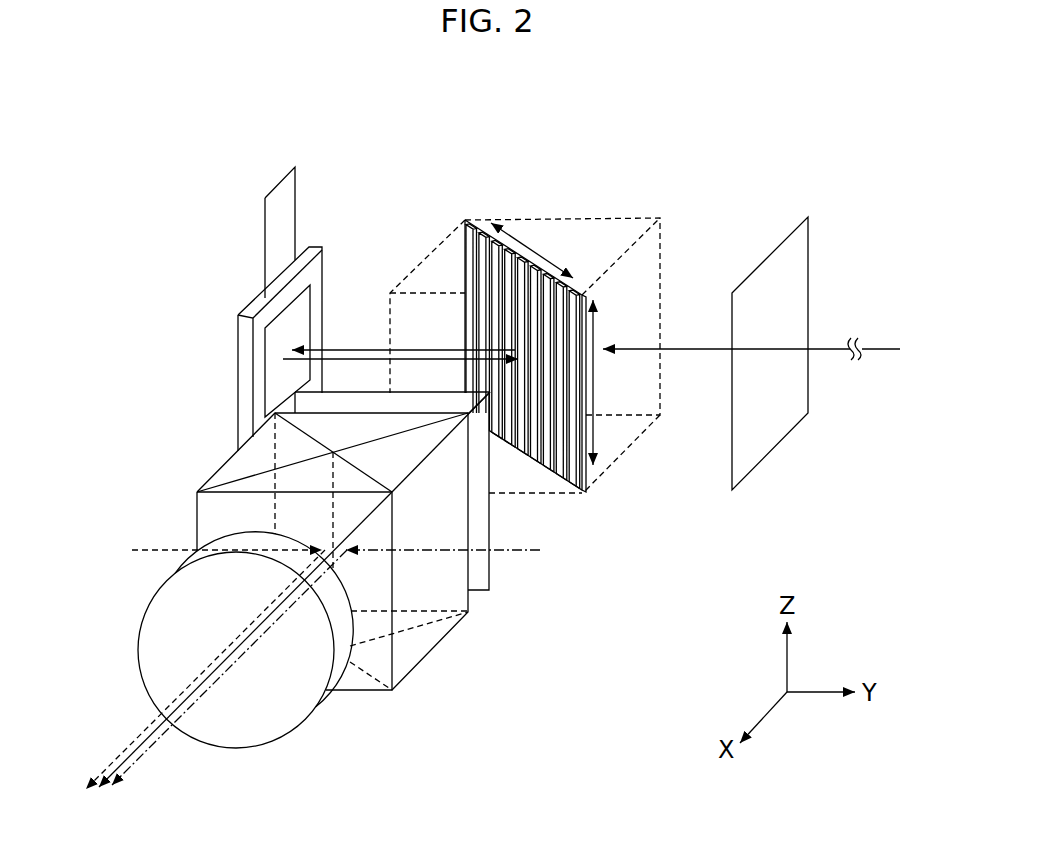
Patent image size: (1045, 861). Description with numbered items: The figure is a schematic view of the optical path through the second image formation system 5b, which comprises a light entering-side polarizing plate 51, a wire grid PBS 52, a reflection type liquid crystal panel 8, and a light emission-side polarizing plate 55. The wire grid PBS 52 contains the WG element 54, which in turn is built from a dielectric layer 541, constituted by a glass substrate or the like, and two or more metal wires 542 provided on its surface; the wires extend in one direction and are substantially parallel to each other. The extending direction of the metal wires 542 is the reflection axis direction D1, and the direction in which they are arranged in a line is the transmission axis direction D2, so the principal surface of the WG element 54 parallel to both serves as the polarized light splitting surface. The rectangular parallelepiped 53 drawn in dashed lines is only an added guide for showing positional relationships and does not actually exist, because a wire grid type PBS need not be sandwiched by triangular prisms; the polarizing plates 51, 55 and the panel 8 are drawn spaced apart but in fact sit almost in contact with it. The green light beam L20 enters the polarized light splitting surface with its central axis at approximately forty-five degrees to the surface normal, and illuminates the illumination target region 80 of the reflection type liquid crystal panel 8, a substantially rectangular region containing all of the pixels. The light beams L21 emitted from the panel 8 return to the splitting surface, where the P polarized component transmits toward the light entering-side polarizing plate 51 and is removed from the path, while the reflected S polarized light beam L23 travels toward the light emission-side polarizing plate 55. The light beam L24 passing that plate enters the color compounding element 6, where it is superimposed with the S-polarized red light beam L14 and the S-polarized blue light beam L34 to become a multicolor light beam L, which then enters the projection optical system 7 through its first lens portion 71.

The second image formation system 5b is at (786, 147).
The wire grid PBS 52 is at (636, 197).
The rectangular parallelepiped 53 is at (580, 233).
The WG element 54 is at (502, 156).
The dielectric layer 541 is at (470, 233).
The metal wires 542 is at (465, 247).
The light entering-side polarizing plate 51 is at (762, 432).
The reflection type liquid crystal panel 8 is at (236, 372).
The illumination target region 80 is at (297, 318).
The color compounding element 6 is at (417, 638).
The light emission-side polarizing plate 55 is at (478, 520).
The first lens portion 71 is at (297, 700).
The projection optical system 7 is at (263, 657).
The multicolor light beam L is at (240, 628).
The S-polarized red light beam L14 is at (160, 548).
The green light beam L20 is at (834, 352).
The light beams emitted from the reflection type liquid crystal panel L21 is at (355, 358).
The light beam reflecting on the polarized light splitting surface L23 is at (490, 380).
The light beam passing through the light emission-side polarizing plate L24 is at (523, 452).
The S-polarized blue light beam L34 is at (520, 556).
The reflection axis direction D1 is at (609, 382).
The transmission axis direction D2 is at (532, 250).